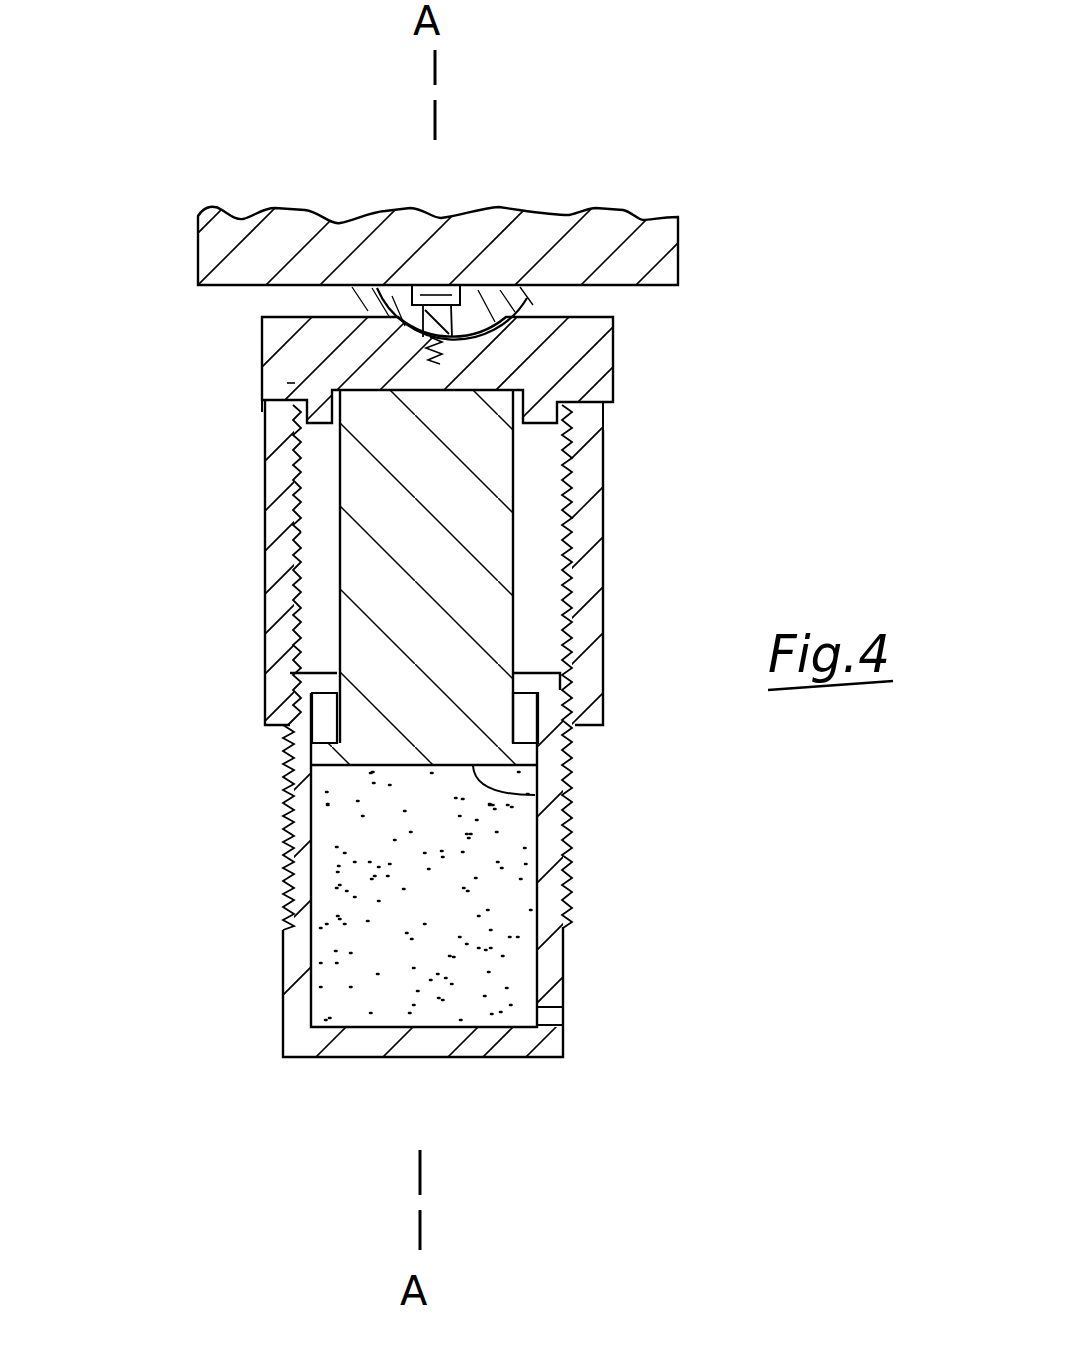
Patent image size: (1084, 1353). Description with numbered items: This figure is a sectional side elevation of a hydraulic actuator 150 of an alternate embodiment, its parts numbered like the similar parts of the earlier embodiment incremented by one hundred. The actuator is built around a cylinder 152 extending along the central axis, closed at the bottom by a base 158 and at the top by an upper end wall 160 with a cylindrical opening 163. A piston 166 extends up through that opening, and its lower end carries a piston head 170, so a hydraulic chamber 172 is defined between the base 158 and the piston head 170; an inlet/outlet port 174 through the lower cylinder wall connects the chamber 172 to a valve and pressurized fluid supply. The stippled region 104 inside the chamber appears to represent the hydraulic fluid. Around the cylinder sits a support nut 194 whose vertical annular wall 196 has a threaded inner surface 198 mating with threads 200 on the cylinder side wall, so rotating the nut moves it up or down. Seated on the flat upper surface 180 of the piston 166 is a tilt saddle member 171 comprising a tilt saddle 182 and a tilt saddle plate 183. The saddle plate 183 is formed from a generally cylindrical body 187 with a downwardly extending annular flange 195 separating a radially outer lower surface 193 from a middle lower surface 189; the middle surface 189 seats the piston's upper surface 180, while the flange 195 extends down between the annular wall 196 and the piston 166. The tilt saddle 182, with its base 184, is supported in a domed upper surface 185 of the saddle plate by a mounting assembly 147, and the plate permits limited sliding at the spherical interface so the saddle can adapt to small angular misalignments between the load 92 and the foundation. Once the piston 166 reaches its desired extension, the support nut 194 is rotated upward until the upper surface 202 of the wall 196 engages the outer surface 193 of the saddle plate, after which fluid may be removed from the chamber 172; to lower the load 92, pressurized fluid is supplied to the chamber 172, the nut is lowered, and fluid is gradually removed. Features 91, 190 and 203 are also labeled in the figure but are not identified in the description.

The load 92 is at (681, 255).
The housing bore surface 91 is at (652, 287).
The mounting assembly 147 is at (513, 285).
The tilt saddle 182 is at (462, 296).
The valve stem 190 is at (447, 285).
The base 184 is at (330, 285).
The gap 203 is at (294, 385).
The domed upper surface 185 is at (274, 315).
The middle lower surface 189 is at (287, 383).
The upper surface 202 is at (297, 400).
The tilt saddle member 171 is at (237, 389).
The tilt saddle plate 183 is at (611, 352).
The cylindrical body 187 is at (614, 328).
The upper surface 180 is at (613, 382).
The outer lower surface 193 is at (605, 419).
The actuator 150 is at (713, 430).
The support nut 194 is at (265, 603).
The annular wall 196 is at (605, 565).
The annular flange 195 is at (290, 457).
The inner surface 198 is at (300, 560).
The threads 200 is at (285, 843).
The piston 166 is at (340, 493).
The cylindrical opening 163 is at (330, 677).
The upper end wall 160 is at (533, 673).
The cylinder 152 is at (564, 950).
The inlet/outlet port 174 is at (555, 1002).
The piston head 170 is at (540, 795).
The fluid medium 104 is at (468, 981).
The hydraulic chamber 172 is at (365, 1028).
The base 158 is at (437, 1060).